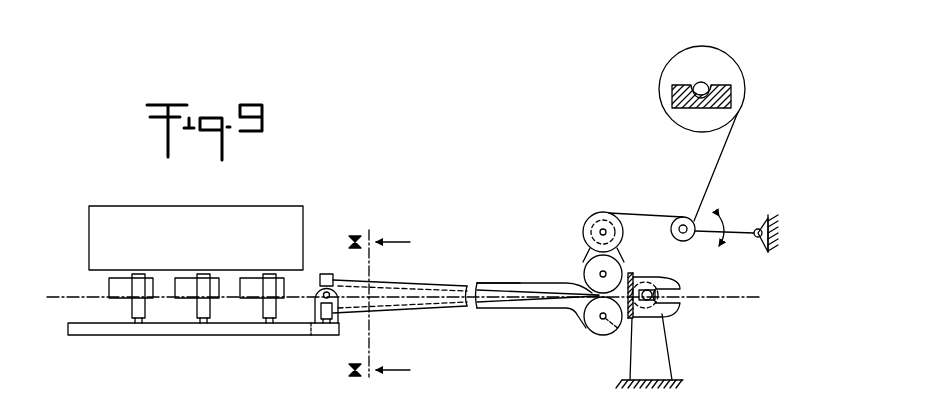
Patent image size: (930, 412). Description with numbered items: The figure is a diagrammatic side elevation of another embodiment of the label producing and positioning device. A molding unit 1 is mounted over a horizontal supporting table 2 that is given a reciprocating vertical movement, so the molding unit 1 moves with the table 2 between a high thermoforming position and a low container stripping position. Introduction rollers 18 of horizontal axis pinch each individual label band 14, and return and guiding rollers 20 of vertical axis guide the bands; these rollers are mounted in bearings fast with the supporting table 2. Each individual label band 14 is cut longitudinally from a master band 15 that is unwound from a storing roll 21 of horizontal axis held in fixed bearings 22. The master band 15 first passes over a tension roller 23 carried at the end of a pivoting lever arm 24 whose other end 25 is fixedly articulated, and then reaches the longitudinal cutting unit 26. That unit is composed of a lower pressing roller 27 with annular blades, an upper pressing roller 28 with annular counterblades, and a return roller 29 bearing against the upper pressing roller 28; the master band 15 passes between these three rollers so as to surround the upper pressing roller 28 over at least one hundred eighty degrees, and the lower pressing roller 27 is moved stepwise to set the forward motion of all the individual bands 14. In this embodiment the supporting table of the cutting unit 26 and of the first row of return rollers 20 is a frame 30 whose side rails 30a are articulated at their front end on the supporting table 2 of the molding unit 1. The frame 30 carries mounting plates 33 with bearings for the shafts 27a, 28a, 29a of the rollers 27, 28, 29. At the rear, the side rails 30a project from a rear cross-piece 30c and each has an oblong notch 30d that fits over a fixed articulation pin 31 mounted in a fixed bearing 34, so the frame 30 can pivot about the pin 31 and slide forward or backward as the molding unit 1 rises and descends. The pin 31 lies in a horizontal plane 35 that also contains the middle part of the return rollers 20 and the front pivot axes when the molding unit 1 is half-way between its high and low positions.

The molding unit 1 is at (280, 213).
The supporting table 2 is at (289, 332).
The individual label band 14 is at (372, 281).
The master band 15 is at (712, 172).
The introduction roller 18 is at (120, 290).
The return and guiding roller 20 is at (136, 312).
The storing roll 21 is at (672, 65).
The fixed bearings 22 is at (673, 98).
The tension roller 23 is at (683, 217).
The pivoting lever arm 24 is at (739, 226).
The articulated end of lever arm 25 is at (763, 215).
The longitudinal cutting unit 26 is at (558, 228).
The lower pressing roller 27 is at (608, 336).
The shaft of lower pressing roller 27a is at (586, 328).
The upper pressing roller 28 is at (620, 268).
The shaft of upper pressing roller 28a is at (600, 274).
The return roller 29 is at (599, 213).
The shaft of return roller 29a is at (609, 227).
The supporting table (support frame) 30 is at (548, 311).
The side rails 30a is at (508, 283).
The rear cross-piece 30c is at (637, 320).
The oblong notch 30d is at (668, 289).
The articulation pin 31 is at (665, 311).
The mounting plates 33 is at (585, 258).
The fixed bearing 34 is at (662, 356).
The horizontal plane 35 is at (76, 297).